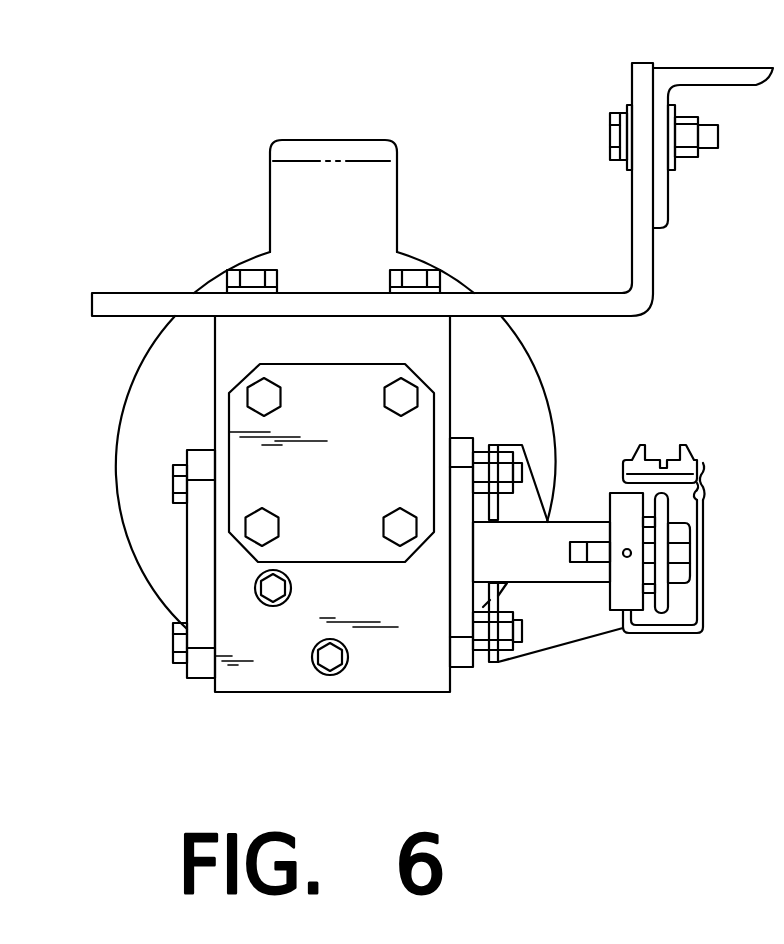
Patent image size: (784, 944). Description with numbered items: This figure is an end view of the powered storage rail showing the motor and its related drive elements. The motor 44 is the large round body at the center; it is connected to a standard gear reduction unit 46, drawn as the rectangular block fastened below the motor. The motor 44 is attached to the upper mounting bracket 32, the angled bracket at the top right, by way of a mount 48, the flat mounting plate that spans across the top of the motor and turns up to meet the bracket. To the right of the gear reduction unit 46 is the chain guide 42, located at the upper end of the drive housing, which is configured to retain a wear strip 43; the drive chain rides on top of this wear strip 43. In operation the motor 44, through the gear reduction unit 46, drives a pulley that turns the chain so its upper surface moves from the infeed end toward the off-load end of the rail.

The upper mounting bracket 32 is at (694, 68).
The mount 48 is at (626, 288).
The motor 44 is at (545, 393).
The gear reduction unit 46 is at (248, 677).
The chain guide 42 is at (702, 463).
The wear strip 43 is at (660, 462).